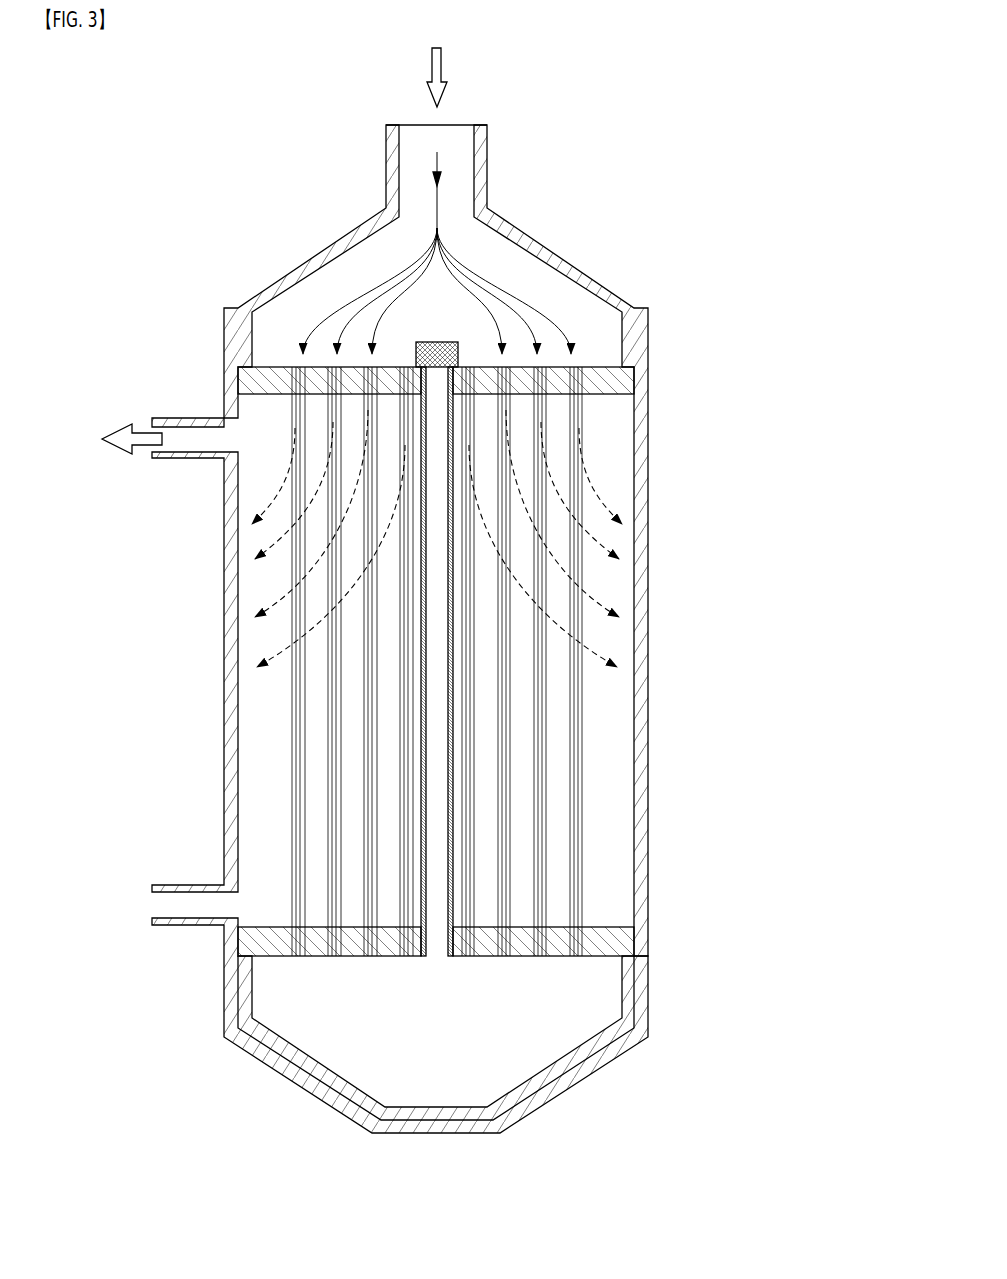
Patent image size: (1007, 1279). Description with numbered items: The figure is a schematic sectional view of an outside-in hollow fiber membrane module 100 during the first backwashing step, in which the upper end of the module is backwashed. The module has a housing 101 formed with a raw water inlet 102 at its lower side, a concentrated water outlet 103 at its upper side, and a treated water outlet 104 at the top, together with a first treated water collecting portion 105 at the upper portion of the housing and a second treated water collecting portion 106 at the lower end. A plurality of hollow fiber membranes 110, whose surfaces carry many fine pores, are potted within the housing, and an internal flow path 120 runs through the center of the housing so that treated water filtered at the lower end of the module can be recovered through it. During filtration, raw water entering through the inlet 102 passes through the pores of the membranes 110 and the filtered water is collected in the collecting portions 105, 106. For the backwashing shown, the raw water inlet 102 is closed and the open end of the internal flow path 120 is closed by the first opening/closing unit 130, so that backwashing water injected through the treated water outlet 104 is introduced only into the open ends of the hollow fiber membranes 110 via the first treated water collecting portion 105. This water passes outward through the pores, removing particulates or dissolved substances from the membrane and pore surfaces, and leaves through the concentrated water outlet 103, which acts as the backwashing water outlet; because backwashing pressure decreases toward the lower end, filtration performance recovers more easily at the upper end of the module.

The dust collecting apparatus 100 is at (620, 230).
The housing 101 is at (648, 553).
The raw water inlet 102 is at (170, 885).
The concentrated water outlet 103 is at (190, 418).
The treated water outlet 104 is at (488, 176).
The first treated water collecting portion 105 is at (587, 313).
The second treated water collecting portion 106 is at (600, 1008).
The hollow fiber membranes 110 is at (580, 515).
The internal flow path 120 is at (452, 606).
The first opening/closing unit 130 is at (421, 341).